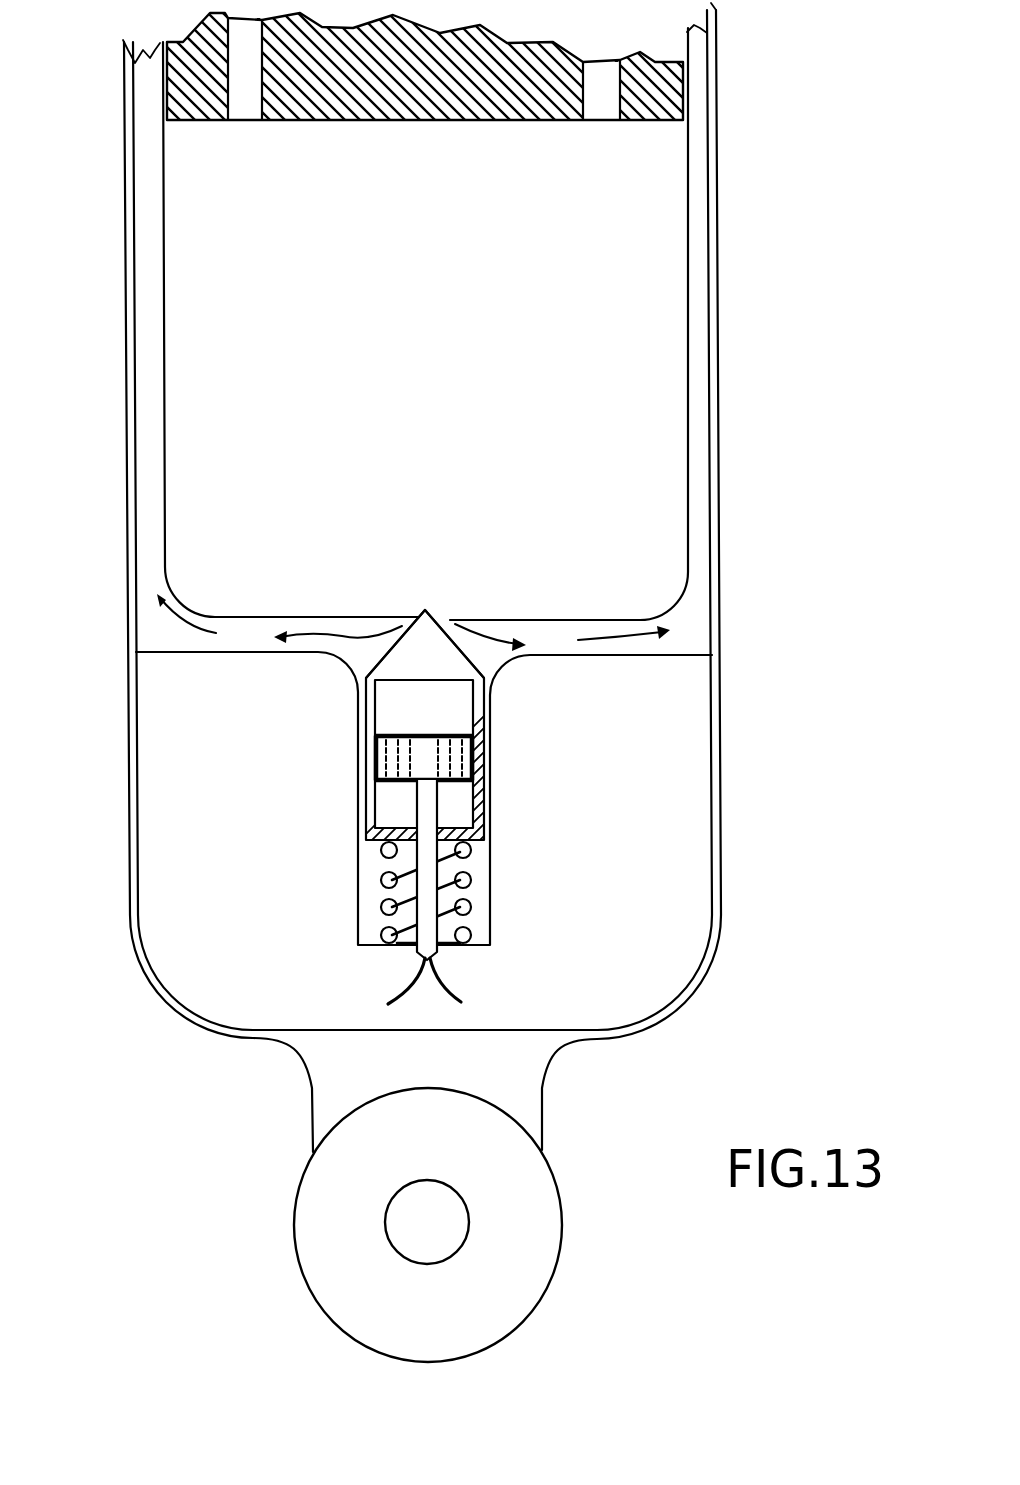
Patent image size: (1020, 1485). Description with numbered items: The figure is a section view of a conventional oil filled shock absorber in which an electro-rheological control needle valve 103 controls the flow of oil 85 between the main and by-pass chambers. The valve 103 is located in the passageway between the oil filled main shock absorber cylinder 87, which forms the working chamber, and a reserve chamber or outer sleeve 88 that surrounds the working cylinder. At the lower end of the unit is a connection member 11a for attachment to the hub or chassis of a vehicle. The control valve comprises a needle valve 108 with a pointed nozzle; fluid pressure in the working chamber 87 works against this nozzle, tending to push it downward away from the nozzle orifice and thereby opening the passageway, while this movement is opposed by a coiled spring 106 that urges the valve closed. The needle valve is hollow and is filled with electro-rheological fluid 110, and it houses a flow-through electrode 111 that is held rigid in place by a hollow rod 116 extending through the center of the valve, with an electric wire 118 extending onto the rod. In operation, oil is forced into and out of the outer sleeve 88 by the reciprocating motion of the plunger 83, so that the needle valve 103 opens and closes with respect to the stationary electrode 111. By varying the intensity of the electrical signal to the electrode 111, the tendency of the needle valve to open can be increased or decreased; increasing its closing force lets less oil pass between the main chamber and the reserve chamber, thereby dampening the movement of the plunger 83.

The plunger member 83 is at (413, 122).
The oil 85 is at (452, 378).
The main shock absorber cylinder 87 is at (689, 432).
The outer sleeve 88 is at (149, 402).
The electro-rheological control needle valve 103 is at (370, 736).
The coiled spring 106 is at (435, 885).
The needle valve 108 is at (420, 625).
The electro-rheological fluid 110 is at (445, 708).
The flow-through electrode 111 is at (462, 763).
The hollow rod 116 is at (385, 895).
The electric wire 118 is at (455, 998).
The connection member 11a is at (484, 1337).